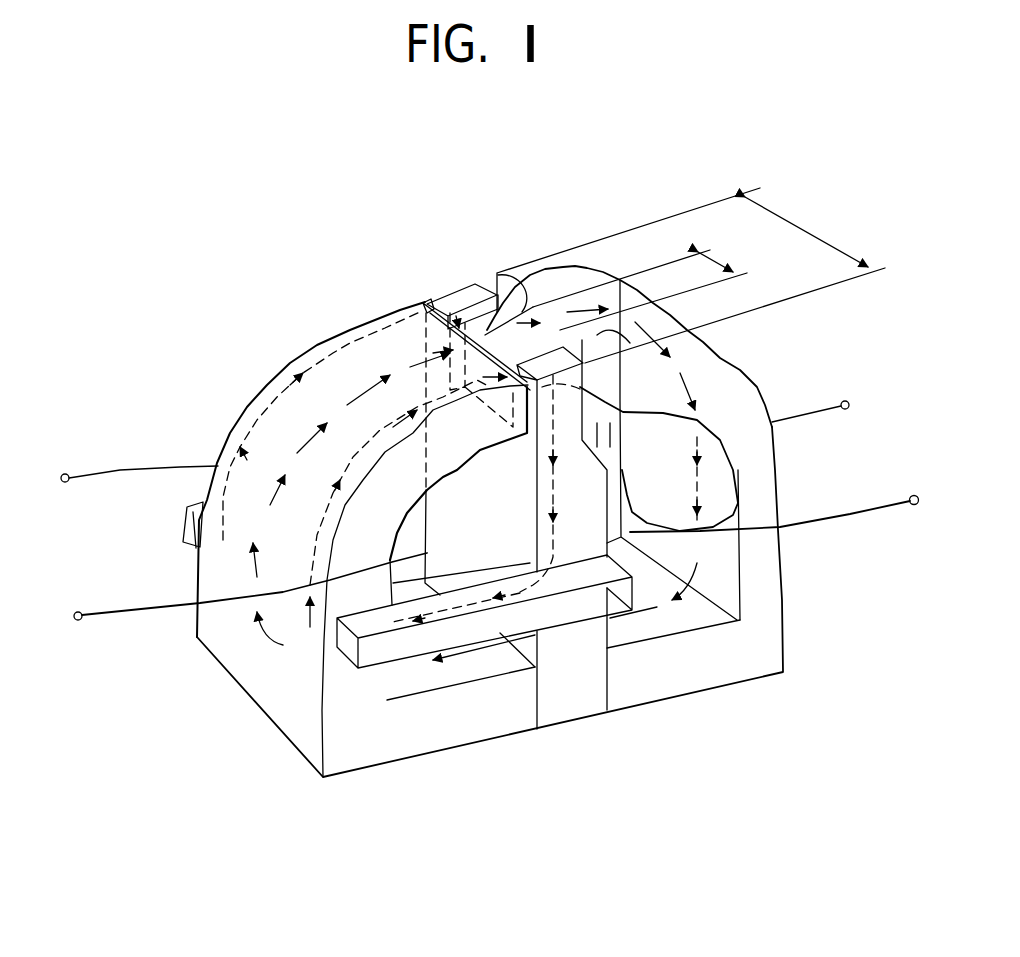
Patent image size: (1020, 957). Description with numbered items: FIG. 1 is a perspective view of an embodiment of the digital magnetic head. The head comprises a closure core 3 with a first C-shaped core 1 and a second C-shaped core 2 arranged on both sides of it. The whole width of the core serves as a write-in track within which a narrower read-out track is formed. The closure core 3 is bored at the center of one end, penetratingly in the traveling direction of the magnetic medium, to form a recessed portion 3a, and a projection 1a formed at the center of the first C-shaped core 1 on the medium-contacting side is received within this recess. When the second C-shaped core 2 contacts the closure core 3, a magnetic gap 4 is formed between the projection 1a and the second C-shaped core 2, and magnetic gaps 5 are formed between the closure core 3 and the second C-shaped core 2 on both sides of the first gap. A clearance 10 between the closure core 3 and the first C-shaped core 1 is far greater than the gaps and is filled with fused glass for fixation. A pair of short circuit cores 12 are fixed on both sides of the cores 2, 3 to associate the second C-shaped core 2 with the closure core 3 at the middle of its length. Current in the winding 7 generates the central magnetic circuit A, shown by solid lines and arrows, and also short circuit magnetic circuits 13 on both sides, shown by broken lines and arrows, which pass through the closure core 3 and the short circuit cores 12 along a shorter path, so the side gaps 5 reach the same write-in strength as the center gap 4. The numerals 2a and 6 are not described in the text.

The first C-shaped core 1 is at (747, 390).
The projection 1a is at (490, 330).
The second C-shaped core 2 is at (270, 387).
The inner arc surface of yoke 2a is at (480, 363).
The closure core 3 is at (570, 702).
The recessed portion 3a is at (463, 308).
The magnetic gap 4 is at (470, 320).
The magnetic gap 5 is at (427, 303).
The coil lead 6 is at (853, 520).
The winding 7 is at (132, 613).
The clearance 10 is at (527, 357).
The short circuit core 12 is at (183, 527).
The short circuit magnetic circuit 13 is at (313, 633).
The magnetic circuit A is at (268, 643).